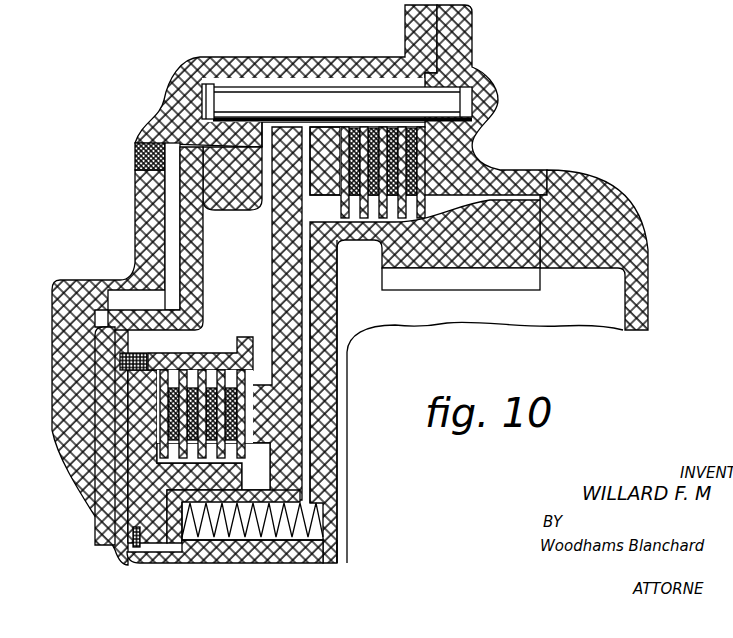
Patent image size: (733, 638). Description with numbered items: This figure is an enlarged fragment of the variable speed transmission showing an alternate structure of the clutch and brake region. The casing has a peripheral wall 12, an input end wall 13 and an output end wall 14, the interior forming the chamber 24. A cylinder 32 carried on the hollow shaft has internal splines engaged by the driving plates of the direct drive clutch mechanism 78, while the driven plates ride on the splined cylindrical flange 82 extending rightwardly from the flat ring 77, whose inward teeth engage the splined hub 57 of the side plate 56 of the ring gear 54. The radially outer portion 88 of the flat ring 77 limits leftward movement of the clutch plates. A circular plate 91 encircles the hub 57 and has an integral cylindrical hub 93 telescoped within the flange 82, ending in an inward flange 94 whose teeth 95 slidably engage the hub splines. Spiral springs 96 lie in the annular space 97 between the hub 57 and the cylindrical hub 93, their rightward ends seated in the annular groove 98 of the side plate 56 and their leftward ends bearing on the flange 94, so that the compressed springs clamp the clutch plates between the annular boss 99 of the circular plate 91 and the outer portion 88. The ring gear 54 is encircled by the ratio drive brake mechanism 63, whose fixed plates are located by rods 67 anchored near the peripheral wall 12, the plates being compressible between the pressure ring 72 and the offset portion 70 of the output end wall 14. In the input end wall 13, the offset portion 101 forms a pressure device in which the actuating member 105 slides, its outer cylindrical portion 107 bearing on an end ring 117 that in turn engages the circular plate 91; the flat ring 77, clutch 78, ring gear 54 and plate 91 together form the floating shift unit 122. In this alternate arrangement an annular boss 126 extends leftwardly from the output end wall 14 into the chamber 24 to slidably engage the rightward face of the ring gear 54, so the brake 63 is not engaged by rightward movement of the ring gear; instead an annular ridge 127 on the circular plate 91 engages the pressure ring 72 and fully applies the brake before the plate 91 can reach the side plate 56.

The peripheral wall 12 is at (347, 62).
The input end wall 13 is at (68, 355).
The output end wall 14 is at (640, 307).
The chamber 24 is at (500, 306).
The cylinder 32 is at (210, 353).
The ring gear 54 is at (505, 213).
The side plate 56 is at (327, 313).
The hub 57 is at (297, 550).
The ratio drive brake mechanism 63 is at (425, 139).
The rod 67 is at (227, 100).
The offset portion 70 is at (488, 102).
The pressure ring 72 is at (280, 218).
The flat ring 77 is at (145, 497).
The direct drive clutch mechanism 78 is at (153, 384).
The cylindrical flange 82 is at (250, 480).
The radially outer portion 88 is at (142, 413).
The circular plate 91 is at (272, 232).
The cylindrical hub 93 is at (203, 497).
The flange 94 is at (182, 525).
The teeth 95 is at (263, 7).
The spiral springs 96 is at (272, 570).
The annular space 97 is at (237, 573).
The annular groove 98 is at (343, 582).
The annular boss 99 is at (262, 410).
The offset portion 101 is at (135, 183).
The actuating member 105 is at (180, 215).
The outer cylindrical portion 107 is at (228, 178).
The end ring 117 is at (255, 139).
The floating shift unit 122 is at (128, 397).
The annular boss 126 is at (592, 243).
The annular ridge 127 is at (310, 150).